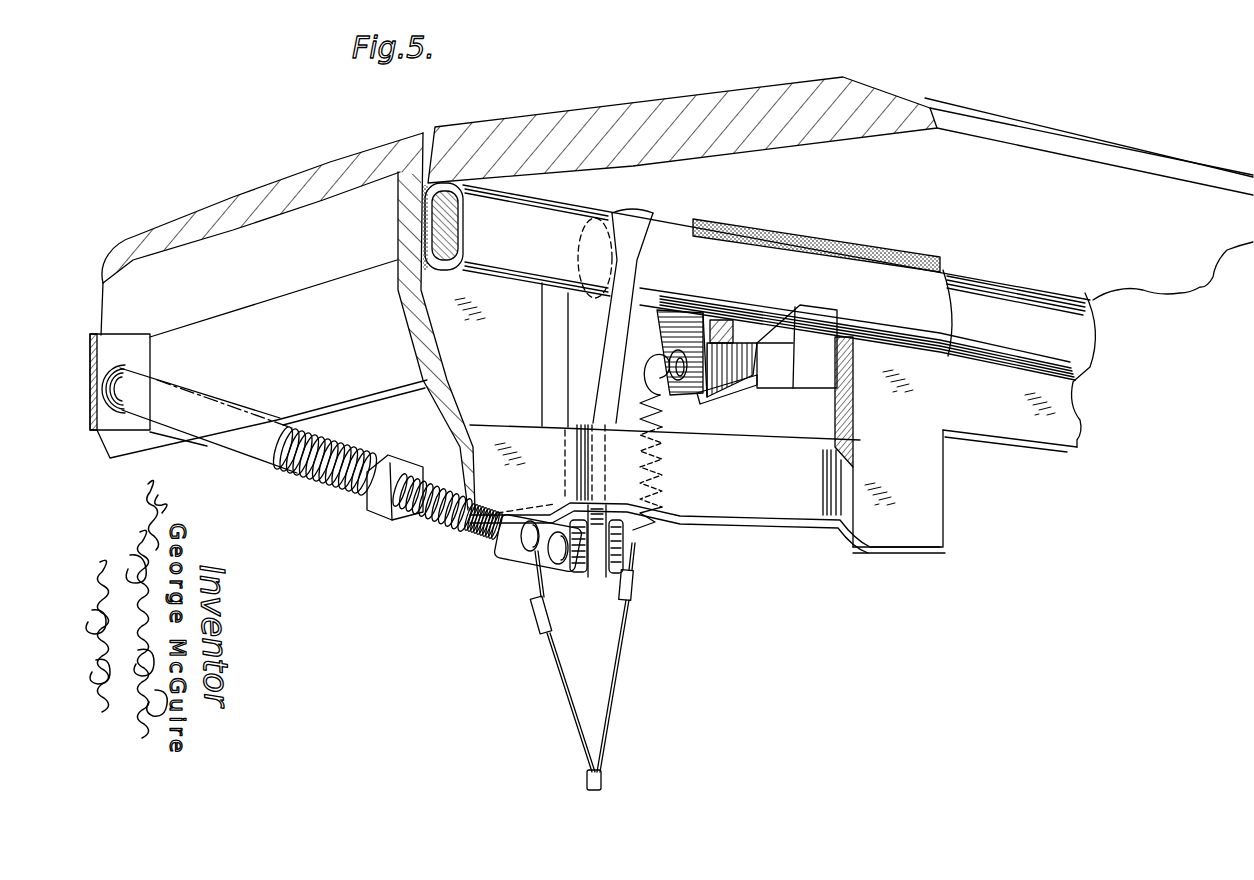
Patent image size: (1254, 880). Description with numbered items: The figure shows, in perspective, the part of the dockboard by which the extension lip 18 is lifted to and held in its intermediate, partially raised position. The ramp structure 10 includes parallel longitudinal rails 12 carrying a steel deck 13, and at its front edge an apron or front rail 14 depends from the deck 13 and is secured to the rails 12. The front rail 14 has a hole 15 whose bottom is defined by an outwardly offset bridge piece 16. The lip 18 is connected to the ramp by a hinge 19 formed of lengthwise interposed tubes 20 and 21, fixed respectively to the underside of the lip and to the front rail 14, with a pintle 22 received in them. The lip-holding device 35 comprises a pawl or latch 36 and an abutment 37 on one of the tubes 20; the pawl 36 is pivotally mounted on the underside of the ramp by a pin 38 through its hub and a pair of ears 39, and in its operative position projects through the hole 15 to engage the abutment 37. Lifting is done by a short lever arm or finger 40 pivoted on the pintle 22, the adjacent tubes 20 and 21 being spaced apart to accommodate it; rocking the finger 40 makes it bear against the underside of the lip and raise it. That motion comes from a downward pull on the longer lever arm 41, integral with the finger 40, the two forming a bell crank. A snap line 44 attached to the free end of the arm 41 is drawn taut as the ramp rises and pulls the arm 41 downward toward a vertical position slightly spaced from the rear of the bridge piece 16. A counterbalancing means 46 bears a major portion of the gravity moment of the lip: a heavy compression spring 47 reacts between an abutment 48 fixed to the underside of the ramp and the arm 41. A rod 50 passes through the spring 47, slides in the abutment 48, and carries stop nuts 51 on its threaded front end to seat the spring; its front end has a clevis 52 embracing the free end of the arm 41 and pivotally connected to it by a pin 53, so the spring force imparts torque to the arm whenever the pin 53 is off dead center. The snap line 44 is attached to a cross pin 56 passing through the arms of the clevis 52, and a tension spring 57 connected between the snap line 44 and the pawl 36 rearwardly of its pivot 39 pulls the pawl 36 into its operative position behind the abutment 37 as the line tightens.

The ramp structure 10 is at (214, 168).
The longitudinal rails 12 is at (382, 380).
The deck 13 is at (328, 163).
The apron or front rail 14 is at (1057, 400).
The hole 15 is at (852, 425).
The bridge piece 16 is at (750, 498).
The extension lip 18 is at (612, 97).
The hinge 19 is at (806, 262).
The tubes 20 is at (857, 280).
The tubes 21 is at (543, 220).
The hinge pin or pintle 22 is at (440, 225).
The lip supporting or holding device 35 is at (755, 404).
The pawl or latch 36 is at (730, 390).
The abutment 37 is at (777, 367).
The pin 38 is at (673, 360).
The ears 39 is at (720, 330).
The lever arm or finger 40 is at (630, 217).
The lever arm 41 is at (583, 367).
The snap line 44 is at (558, 672).
The counterbalancing means 46 is at (334, 508).
The compression spring 47 is at (320, 477).
The abutment 48 is at (137, 357).
The rod 50 is at (437, 527).
The stop nuts 51 is at (377, 493).
The clevis 52 is at (505, 543).
The pin 53 is at (553, 552).
The cross pin 56 is at (525, 540).
The tension spring 57 is at (647, 520).